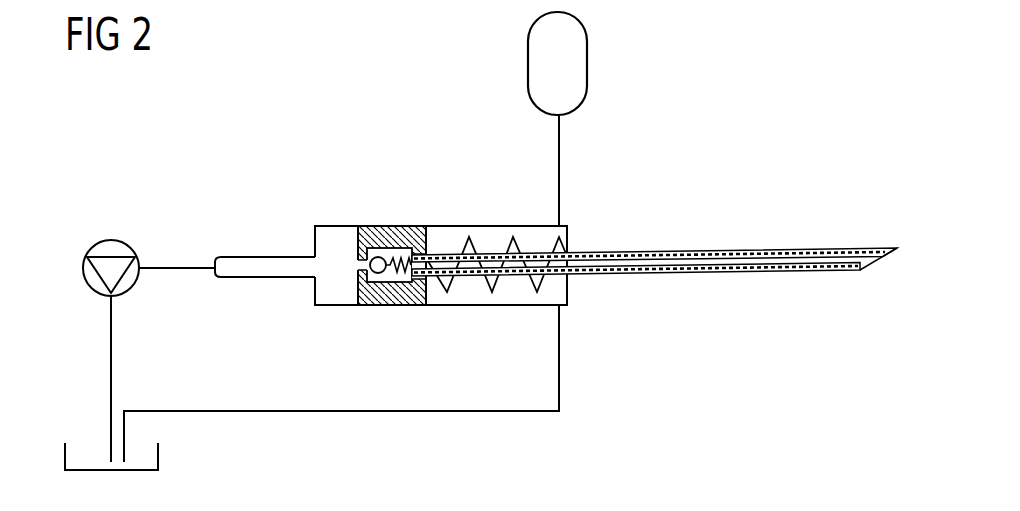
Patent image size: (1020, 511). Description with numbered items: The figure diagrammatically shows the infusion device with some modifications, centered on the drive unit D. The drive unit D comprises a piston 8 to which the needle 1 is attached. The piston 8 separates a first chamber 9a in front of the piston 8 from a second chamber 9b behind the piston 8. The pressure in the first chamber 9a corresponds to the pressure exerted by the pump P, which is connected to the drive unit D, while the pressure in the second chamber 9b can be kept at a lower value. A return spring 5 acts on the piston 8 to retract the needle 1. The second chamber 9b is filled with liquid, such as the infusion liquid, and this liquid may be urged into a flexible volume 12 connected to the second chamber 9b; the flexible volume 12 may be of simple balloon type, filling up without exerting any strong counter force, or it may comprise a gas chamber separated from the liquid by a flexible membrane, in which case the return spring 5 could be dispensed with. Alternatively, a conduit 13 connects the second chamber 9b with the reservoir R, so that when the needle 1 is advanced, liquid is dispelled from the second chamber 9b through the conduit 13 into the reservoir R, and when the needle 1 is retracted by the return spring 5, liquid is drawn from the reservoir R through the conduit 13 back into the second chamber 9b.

The needle 1 is at (704, 250).
The return spring 5 is at (478, 240).
The piston 8 is at (400, 297).
The first chamber 9a is at (340, 297).
The second chamber 9b is at (515, 297).
The flexible volume 12 is at (587, 62).
The conduit 13 is at (372, 412).
The pump P is at (107, 230).
The drive unit D is at (398, 190).
The reservoir R is at (160, 457).